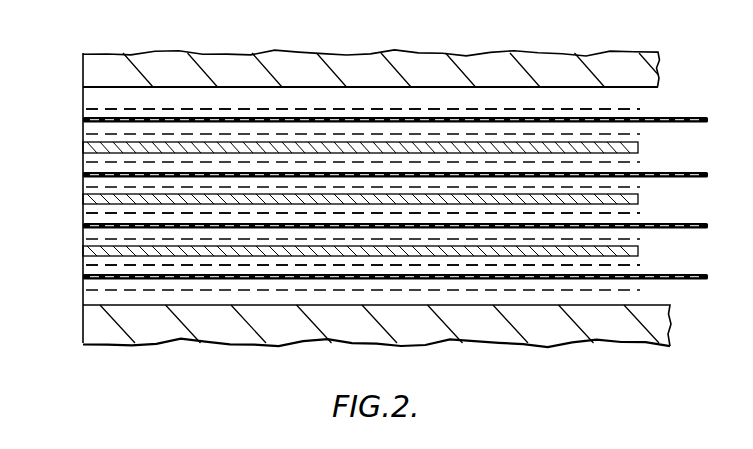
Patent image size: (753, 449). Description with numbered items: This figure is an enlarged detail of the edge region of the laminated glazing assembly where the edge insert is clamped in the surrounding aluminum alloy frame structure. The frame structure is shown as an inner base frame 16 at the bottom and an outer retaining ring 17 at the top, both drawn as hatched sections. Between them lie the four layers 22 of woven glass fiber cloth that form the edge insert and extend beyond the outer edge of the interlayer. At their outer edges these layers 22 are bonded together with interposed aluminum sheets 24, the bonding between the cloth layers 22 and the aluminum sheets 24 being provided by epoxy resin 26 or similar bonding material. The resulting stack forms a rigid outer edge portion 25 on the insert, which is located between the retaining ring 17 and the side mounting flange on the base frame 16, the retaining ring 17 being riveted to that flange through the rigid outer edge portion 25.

The inner base frame 16 is at (353, 320).
The outer retaining ring 17 is at (430, 65).
The layers of woven glass fiber cloth 22 is at (673, 117).
The aluminum sheets 24 is at (87, 148).
The rigid outer edge portion 25 is at (307, 116).
The epoxy resin 26 is at (95, 213).